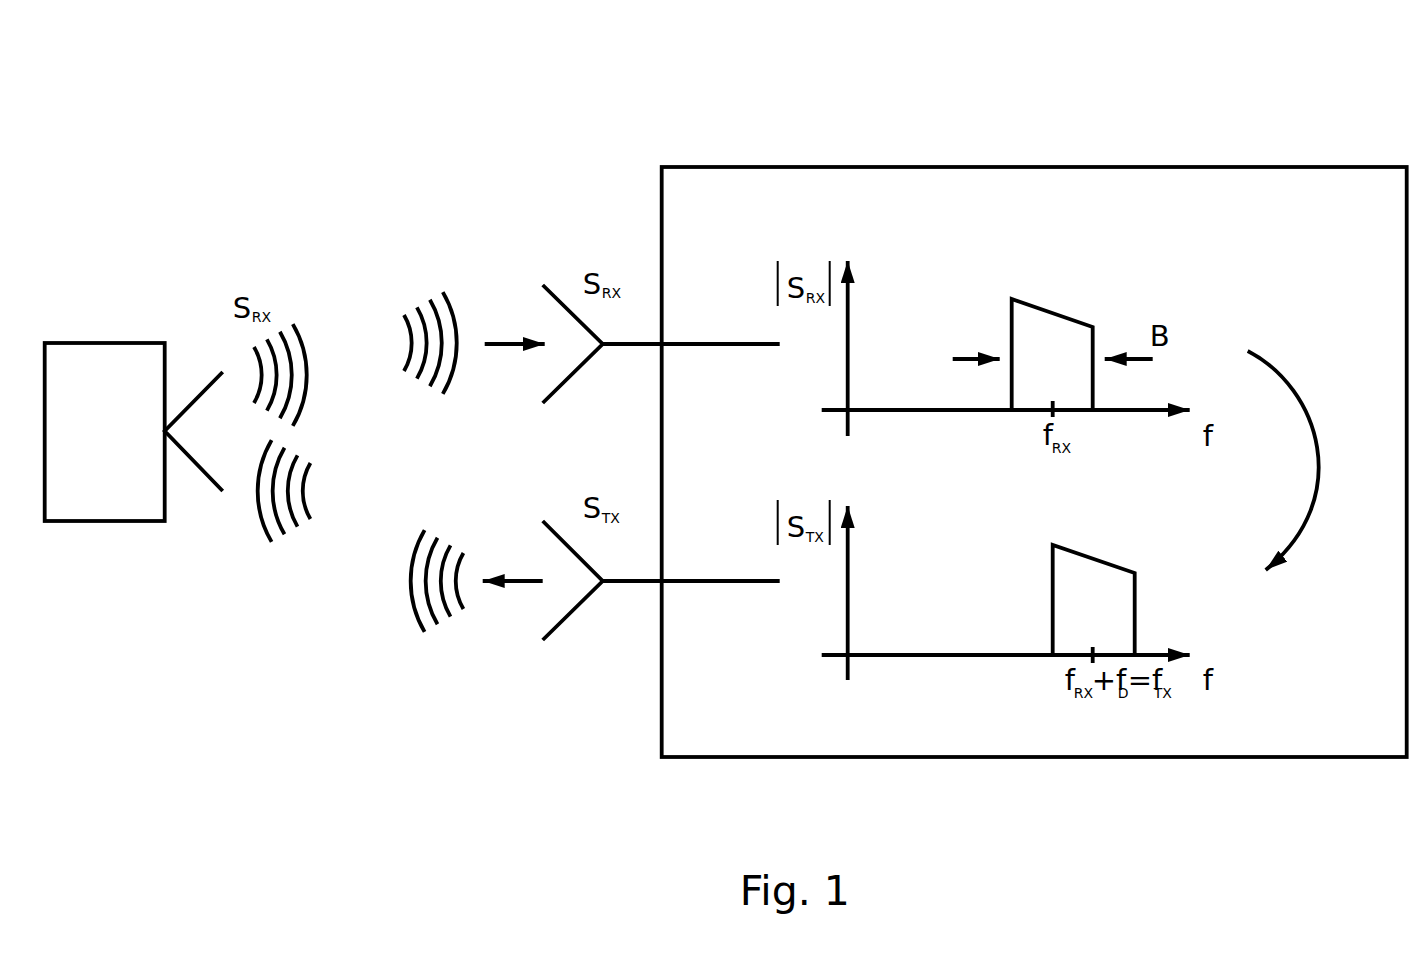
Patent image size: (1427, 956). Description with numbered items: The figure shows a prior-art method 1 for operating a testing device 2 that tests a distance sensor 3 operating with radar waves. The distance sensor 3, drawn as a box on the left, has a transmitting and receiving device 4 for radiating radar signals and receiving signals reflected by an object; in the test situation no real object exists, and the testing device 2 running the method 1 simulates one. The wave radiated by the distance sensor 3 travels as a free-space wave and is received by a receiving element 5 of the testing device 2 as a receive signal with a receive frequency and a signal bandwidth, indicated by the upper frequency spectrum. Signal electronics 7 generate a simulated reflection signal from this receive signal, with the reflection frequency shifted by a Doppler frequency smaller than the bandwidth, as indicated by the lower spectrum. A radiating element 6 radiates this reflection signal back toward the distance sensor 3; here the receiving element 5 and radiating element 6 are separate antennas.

The method 1 is at (1110, 86).
The testing device 2 is at (1190, 86).
The distance sensor 3 is at (114, 452).
The transmitting and receiving device 4 is at (178, 413).
The receiving element 5 is at (572, 313).
The radiating element 6 is at (573, 613).
The signal electronics 7 is at (1357, 230).